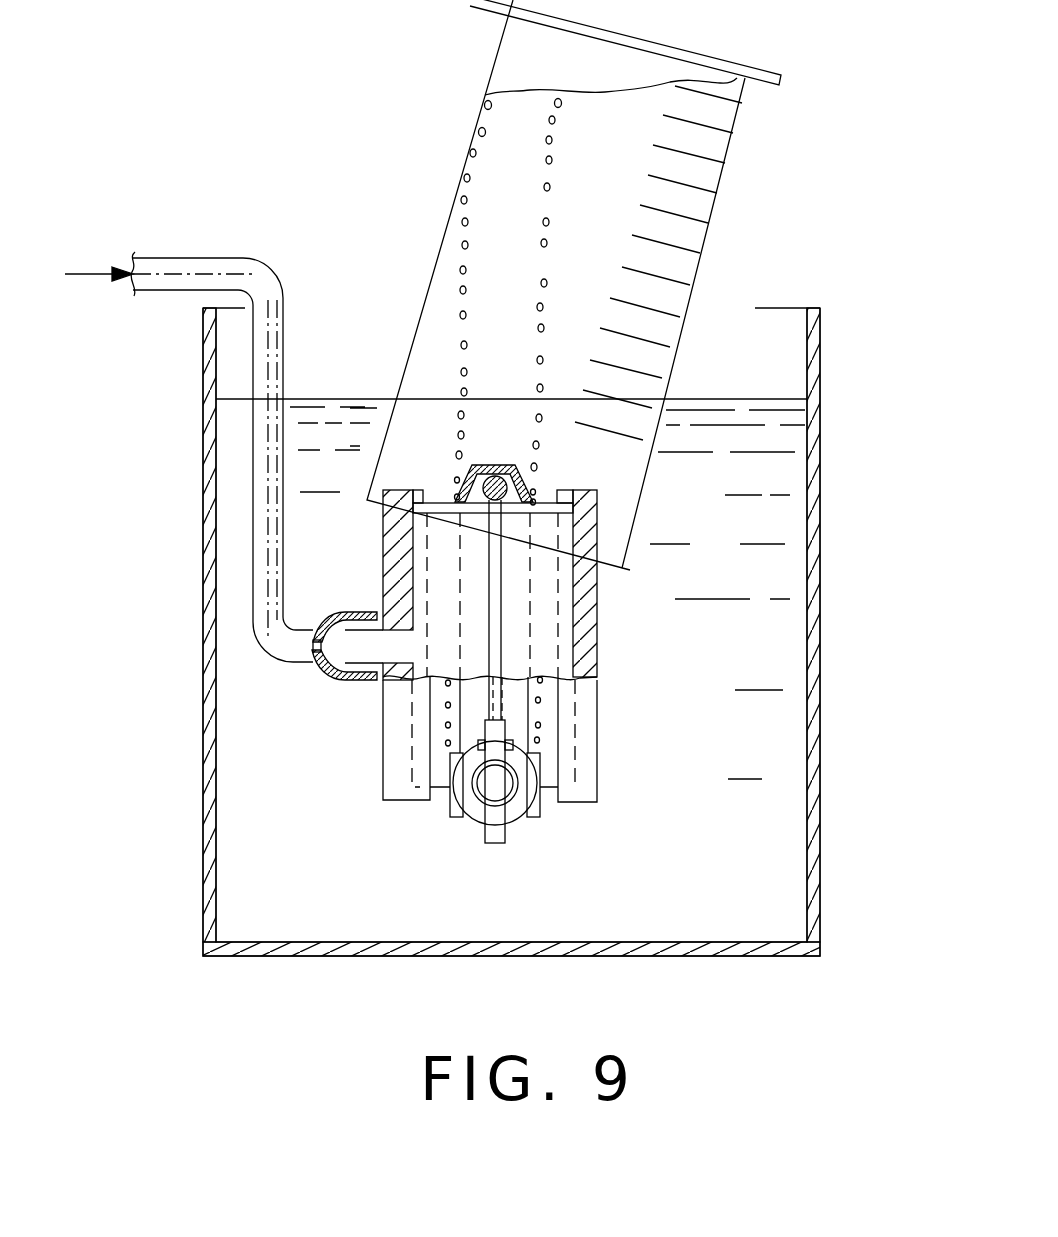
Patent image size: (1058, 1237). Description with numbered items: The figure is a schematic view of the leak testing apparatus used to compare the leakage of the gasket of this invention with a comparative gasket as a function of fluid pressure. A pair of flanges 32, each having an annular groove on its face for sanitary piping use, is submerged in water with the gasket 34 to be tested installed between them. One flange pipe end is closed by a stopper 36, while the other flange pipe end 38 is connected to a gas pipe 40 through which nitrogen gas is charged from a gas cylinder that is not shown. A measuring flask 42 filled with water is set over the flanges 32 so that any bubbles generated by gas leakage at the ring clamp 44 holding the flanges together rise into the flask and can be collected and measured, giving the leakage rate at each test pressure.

The flanges 32 is at (404, 484).
The gasket 34 is at (537, 481).
The stopper 36 is at (593, 633).
The other flange pipe end 38 is at (378, 677).
The gas pipe 40 is at (284, 574).
The measuring flask 42 is at (708, 189).
The ring clamp 44 is at (520, 712).